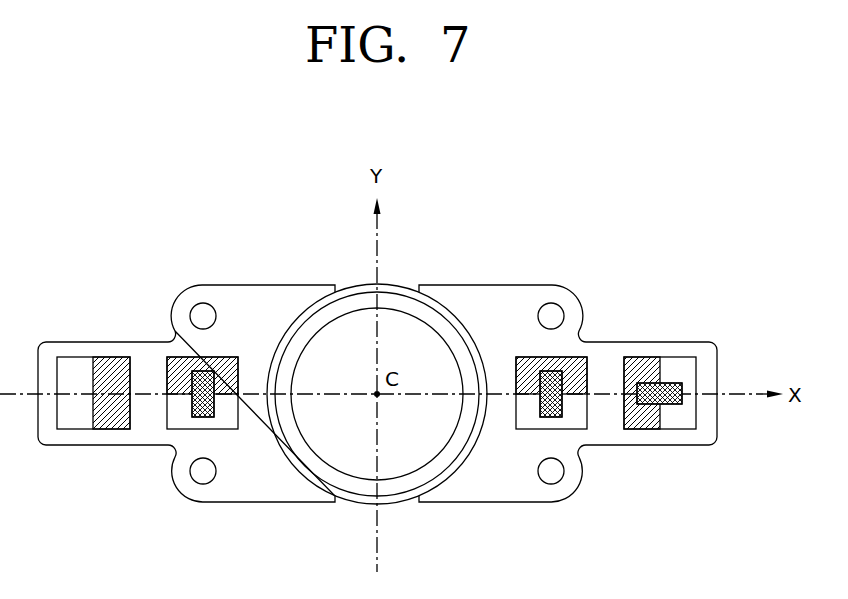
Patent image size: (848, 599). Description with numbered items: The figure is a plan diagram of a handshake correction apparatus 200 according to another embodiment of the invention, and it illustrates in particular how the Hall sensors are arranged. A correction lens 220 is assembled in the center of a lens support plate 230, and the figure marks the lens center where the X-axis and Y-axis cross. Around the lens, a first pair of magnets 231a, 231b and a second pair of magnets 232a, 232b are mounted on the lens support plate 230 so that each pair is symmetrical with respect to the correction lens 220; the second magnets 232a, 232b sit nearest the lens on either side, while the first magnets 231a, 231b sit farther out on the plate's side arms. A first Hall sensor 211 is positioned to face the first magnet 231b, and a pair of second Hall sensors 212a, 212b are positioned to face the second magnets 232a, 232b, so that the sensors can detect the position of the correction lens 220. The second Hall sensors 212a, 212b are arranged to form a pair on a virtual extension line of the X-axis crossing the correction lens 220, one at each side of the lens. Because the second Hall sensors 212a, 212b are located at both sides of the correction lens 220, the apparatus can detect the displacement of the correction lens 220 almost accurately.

The handshake correction apparatus 200 is at (646, 218).
The first Hall sensor 211 is at (680, 380).
The second Hall sensor 212a is at (192, 377).
The second Hall sensor 212b is at (558, 377).
The correction lens 220 is at (400, 337).
The lens support plate 230 is at (491, 307).
The first magnet 231a is at (77, 417).
The first magnet 231b is at (677, 417).
The second magnet 232a is at (180, 418).
The second magnet 232b is at (573, 418).